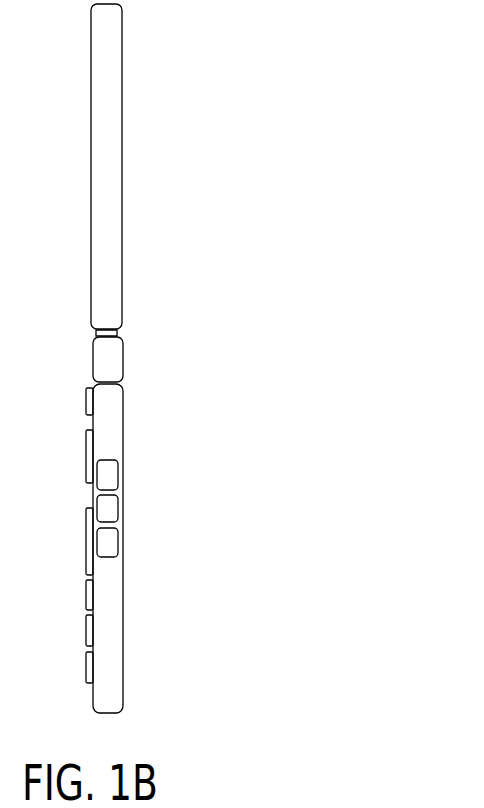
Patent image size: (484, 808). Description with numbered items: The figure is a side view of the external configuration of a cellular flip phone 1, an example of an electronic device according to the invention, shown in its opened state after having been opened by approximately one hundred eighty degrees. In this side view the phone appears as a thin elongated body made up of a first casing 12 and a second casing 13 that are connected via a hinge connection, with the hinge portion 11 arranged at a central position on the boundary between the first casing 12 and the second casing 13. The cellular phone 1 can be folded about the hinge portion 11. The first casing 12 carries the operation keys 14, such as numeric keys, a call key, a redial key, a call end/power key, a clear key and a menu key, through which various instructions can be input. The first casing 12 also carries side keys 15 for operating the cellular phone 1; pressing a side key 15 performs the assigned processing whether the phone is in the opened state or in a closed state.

The cellular phone 1 is at (145, 580).
The hinge portion 11 is at (123, 356).
The first casing 12 is at (123, 418).
The second casing 13 is at (122, 172).
The operation keys 14 is at (82, 400).
The side keys 15 is at (138, 455).